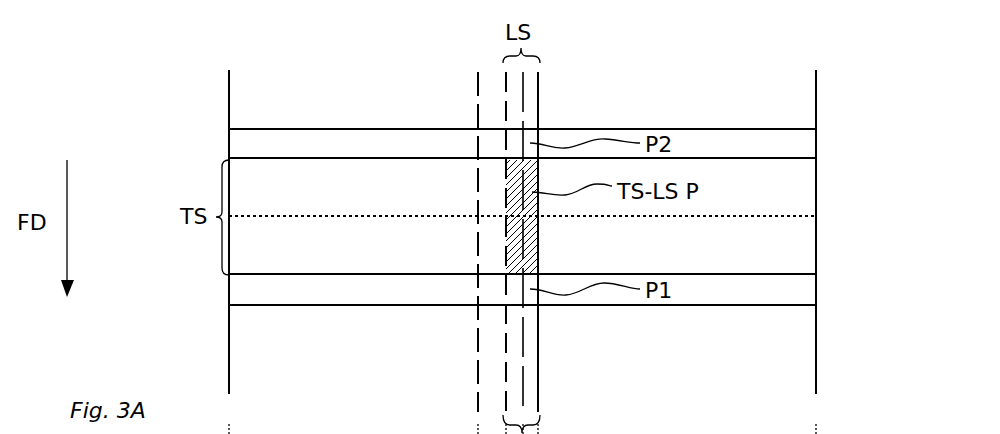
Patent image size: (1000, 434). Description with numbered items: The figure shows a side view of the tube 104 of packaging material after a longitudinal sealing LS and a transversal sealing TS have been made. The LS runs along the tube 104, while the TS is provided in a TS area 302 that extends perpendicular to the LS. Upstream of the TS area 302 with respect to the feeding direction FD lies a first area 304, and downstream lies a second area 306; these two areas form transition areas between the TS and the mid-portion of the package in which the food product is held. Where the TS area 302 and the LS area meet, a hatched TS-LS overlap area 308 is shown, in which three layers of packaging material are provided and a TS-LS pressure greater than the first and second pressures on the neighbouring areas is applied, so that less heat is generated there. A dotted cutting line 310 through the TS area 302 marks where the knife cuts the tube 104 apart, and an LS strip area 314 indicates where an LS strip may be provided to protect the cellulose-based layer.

The tube 104 is at (192, 68).
The TS area 302 is at (818, 158).
The first area 304 is at (818, 274).
The second area 306 is at (818, 129).
The TS-LS overlap area 308 is at (518, 162).
The cutting line 310 is at (348, 215).
The LS strip area 314 is at (378, 433).